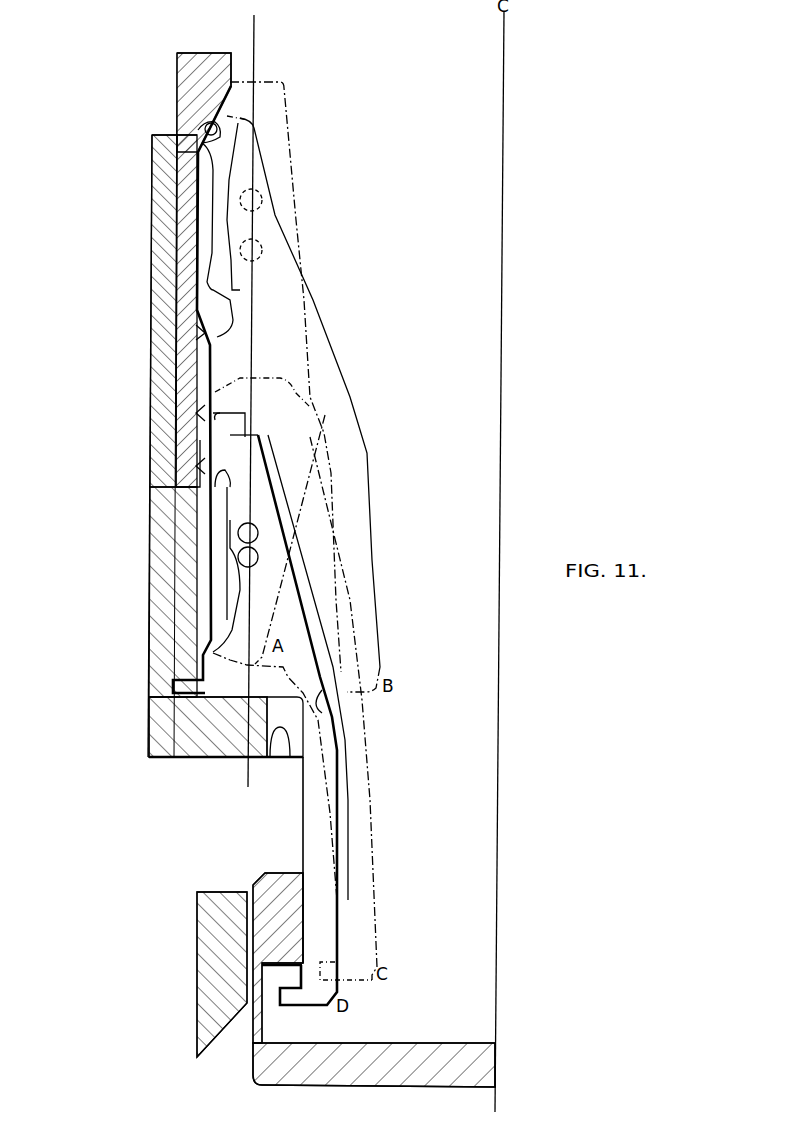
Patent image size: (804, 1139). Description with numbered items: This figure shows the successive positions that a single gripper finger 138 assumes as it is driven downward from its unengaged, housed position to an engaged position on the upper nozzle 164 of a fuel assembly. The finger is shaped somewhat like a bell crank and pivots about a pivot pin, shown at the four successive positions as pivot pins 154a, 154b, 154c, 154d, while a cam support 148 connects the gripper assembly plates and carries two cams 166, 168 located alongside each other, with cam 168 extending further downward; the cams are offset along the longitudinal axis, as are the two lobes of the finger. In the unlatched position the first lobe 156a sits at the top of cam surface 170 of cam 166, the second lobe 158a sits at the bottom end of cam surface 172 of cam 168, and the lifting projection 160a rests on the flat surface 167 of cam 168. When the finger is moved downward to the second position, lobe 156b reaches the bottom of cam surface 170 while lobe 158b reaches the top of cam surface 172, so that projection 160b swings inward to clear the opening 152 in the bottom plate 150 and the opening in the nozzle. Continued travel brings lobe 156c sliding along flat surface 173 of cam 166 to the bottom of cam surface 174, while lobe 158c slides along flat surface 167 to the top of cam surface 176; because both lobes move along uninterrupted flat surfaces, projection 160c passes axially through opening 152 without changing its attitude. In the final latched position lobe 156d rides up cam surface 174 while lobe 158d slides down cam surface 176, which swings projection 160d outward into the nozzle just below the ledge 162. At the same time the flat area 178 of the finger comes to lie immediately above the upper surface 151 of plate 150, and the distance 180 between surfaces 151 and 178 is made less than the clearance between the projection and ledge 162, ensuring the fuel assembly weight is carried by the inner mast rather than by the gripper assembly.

The gripper finger 138 is at (295, 190).
The cam support 148 is at (148, 618).
The bottom plate 150 is at (165, 735).
The upper surface of plate 151 is at (193, 705).
The opening 152 is at (284, 758).
The pivot pin 154a is at (262, 203).
The pivot pin 154b is at (262, 250).
The pivot pin 154c is at (258, 533).
The pivot pin 154d is at (258, 557).
The lobe 156a is at (232, 92).
The lobe 156b is at (197, 160).
The lobe 156c is at (197, 435).
The lobe 156d is at (200, 493).
The lobe 158a is at (192, 300).
The lobe 158b is at (200, 350).
The lobe 158c is at (212, 650).
The lobe 158d is at (200, 686).
The lifting projection 160a is at (255, 666).
The lifting projection 160b is at (328, 716).
The lifting projection 160c is at (318, 965).
The lifting projection 160d is at (300, 992).
The ledge 162 is at (278, 968).
The upper nozzle 164 is at (265, 1067).
The cam 166 is at (185, 375).
The flat surface 167 is at (212, 540).
The cam 168 is at (180, 582).
The cam surface 170 is at (204, 128).
The cam surface 172 is at (195, 330).
The surface 173 is at (192, 418).
The cam surface 174 is at (196, 470).
The cam surface 176 is at (215, 692).
The flat area 178 is at (270, 757).
The distance 180 is at (237, 703).